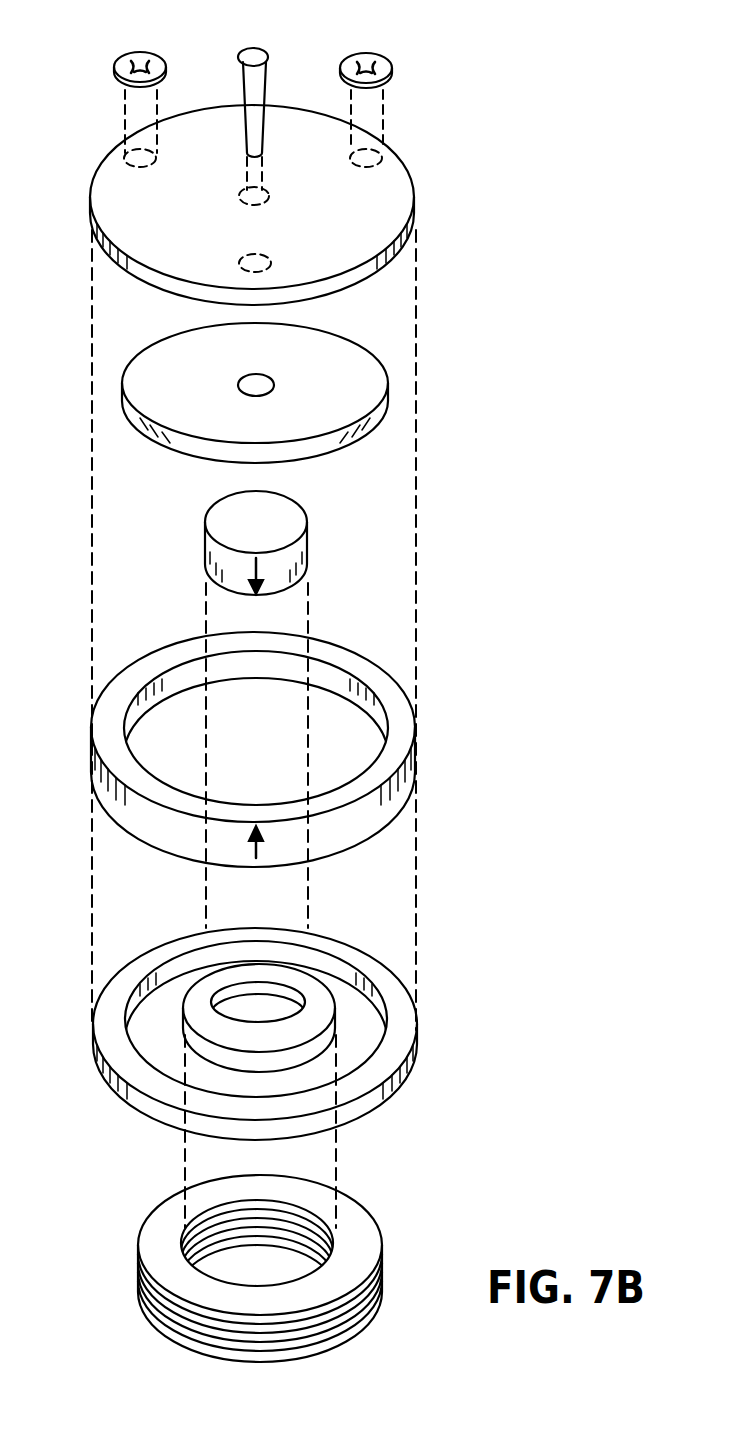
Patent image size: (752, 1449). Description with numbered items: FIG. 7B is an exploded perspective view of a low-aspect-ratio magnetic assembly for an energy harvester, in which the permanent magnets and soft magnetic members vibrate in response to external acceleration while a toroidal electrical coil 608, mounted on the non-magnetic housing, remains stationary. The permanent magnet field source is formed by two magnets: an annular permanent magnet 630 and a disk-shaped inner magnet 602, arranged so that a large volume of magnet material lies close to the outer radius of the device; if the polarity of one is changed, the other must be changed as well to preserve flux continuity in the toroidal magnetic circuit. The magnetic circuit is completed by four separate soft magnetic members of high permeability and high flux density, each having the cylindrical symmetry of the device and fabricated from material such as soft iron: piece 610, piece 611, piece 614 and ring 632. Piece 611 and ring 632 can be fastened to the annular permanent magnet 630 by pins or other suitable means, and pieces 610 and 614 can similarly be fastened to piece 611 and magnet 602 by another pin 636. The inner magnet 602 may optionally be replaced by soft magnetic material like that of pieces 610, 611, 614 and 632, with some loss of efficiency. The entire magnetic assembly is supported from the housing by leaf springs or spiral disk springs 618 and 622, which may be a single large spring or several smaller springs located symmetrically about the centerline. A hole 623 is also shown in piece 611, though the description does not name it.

The disk-shaped magnet 602 is at (308, 552).
The toroidal electrical coil 608 is at (362, 1235).
The piece 610 is at (373, 382).
The piece 611 is at (398, 200).
The piece 614 is at (323, 1002).
The spring 618 is at (120, 63).
The spring 622 is at (382, 65).
The hole 623 is at (268, 258).
The annular permanent magnet 630 is at (397, 703).
The ring 632 is at (400, 1043).
The pin 636 is at (252, 58).